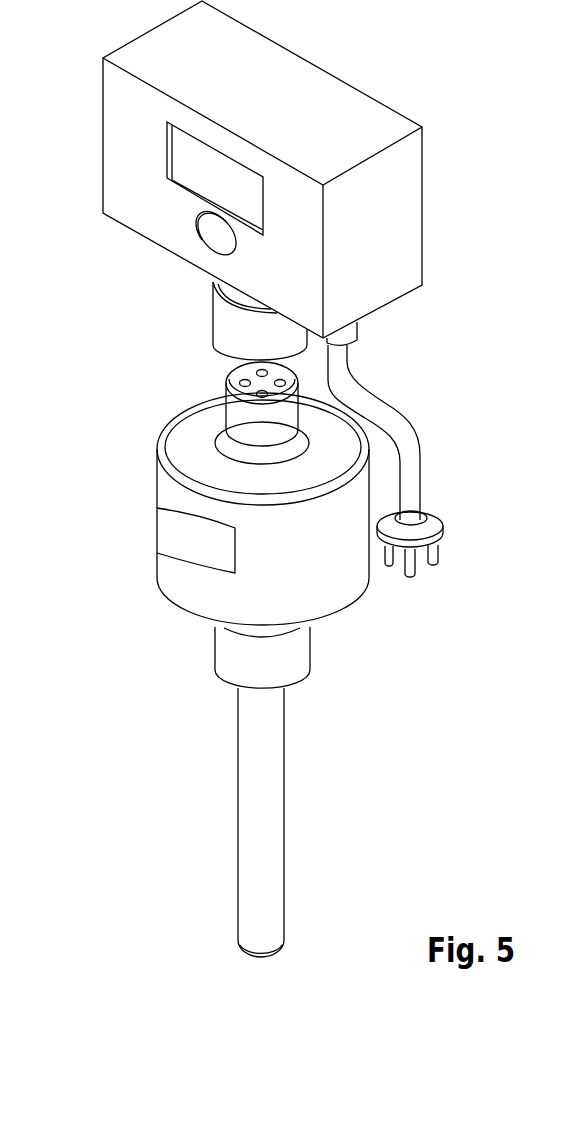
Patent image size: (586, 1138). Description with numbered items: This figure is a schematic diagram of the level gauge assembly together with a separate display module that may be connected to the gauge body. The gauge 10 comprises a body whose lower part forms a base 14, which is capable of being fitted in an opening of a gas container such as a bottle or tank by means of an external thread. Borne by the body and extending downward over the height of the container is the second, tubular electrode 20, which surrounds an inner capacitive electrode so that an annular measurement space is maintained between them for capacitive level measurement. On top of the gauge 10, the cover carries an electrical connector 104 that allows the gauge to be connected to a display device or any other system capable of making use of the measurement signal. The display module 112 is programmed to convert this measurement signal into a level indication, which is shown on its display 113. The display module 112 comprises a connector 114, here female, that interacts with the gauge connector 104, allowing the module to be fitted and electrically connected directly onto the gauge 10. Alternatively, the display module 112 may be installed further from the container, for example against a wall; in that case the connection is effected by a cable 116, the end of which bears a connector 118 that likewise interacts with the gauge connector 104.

The display module 112 is at (80, 87).
The display 113 is at (178, 148).
The connector 114 is at (222, 325).
The electrical connector 104 is at (233, 392).
The gauge 10 is at (120, 488).
The cable 116 is at (404, 431).
The connector 118 is at (439, 524).
The base 14 is at (224, 645).
The second, tubular electrode 20 is at (252, 769).